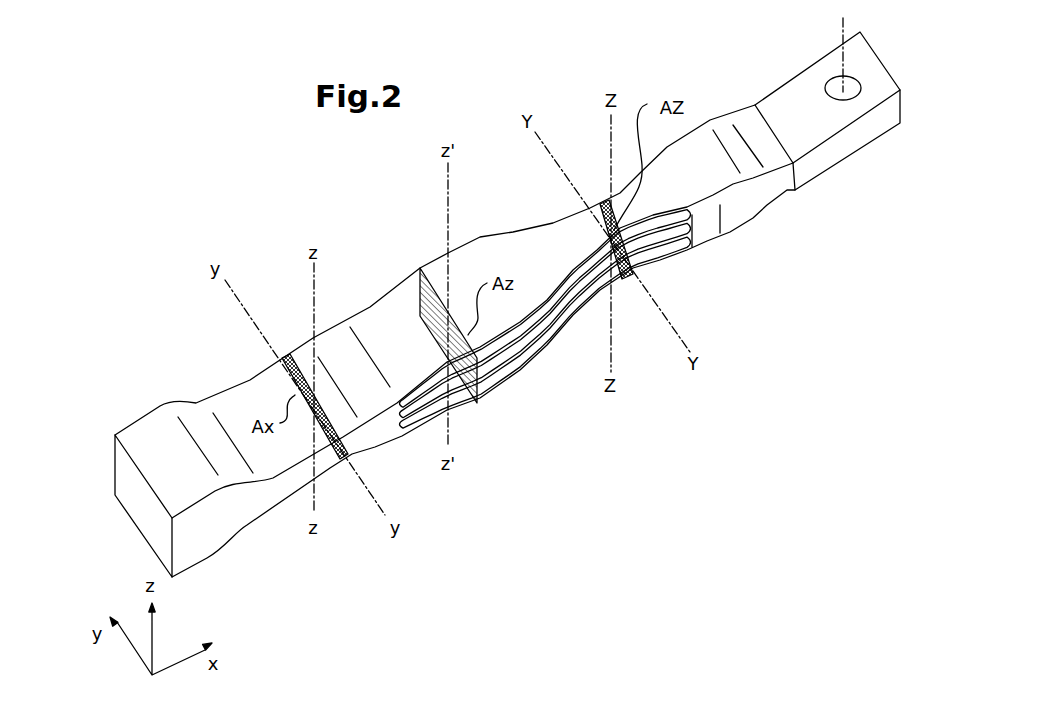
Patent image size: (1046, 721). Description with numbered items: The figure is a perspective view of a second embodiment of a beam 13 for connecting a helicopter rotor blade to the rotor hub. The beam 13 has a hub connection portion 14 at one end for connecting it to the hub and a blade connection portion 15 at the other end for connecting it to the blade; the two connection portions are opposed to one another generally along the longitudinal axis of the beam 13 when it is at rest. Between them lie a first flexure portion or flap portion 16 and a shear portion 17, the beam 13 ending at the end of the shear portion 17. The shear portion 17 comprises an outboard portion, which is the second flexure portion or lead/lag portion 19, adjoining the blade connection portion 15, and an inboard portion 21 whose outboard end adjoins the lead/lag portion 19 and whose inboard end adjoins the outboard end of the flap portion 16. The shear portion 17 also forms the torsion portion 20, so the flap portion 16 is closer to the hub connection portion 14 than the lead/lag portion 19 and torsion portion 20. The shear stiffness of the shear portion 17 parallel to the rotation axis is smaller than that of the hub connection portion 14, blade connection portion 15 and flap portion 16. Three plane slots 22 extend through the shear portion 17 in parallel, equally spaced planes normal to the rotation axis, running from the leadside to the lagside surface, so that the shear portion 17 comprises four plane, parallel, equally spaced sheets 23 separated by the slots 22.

The beam 13 is at (469, 324).
The hub connection portion 14 is at (205, 558).
The blade connection portion 15 is at (782, 128).
The first flexure portion or flap portion 16 is at (159, 387).
The shear portion 17 is at (467, 214).
The torsion portion 20 is at (332, 291).
The second flexure portion or lead/lag portion 19 is at (578, 336).
The inboard portion 21 is at (410, 277).
The plane slots 22 is at (524, 353).
The sheets 23 is at (425, 412).